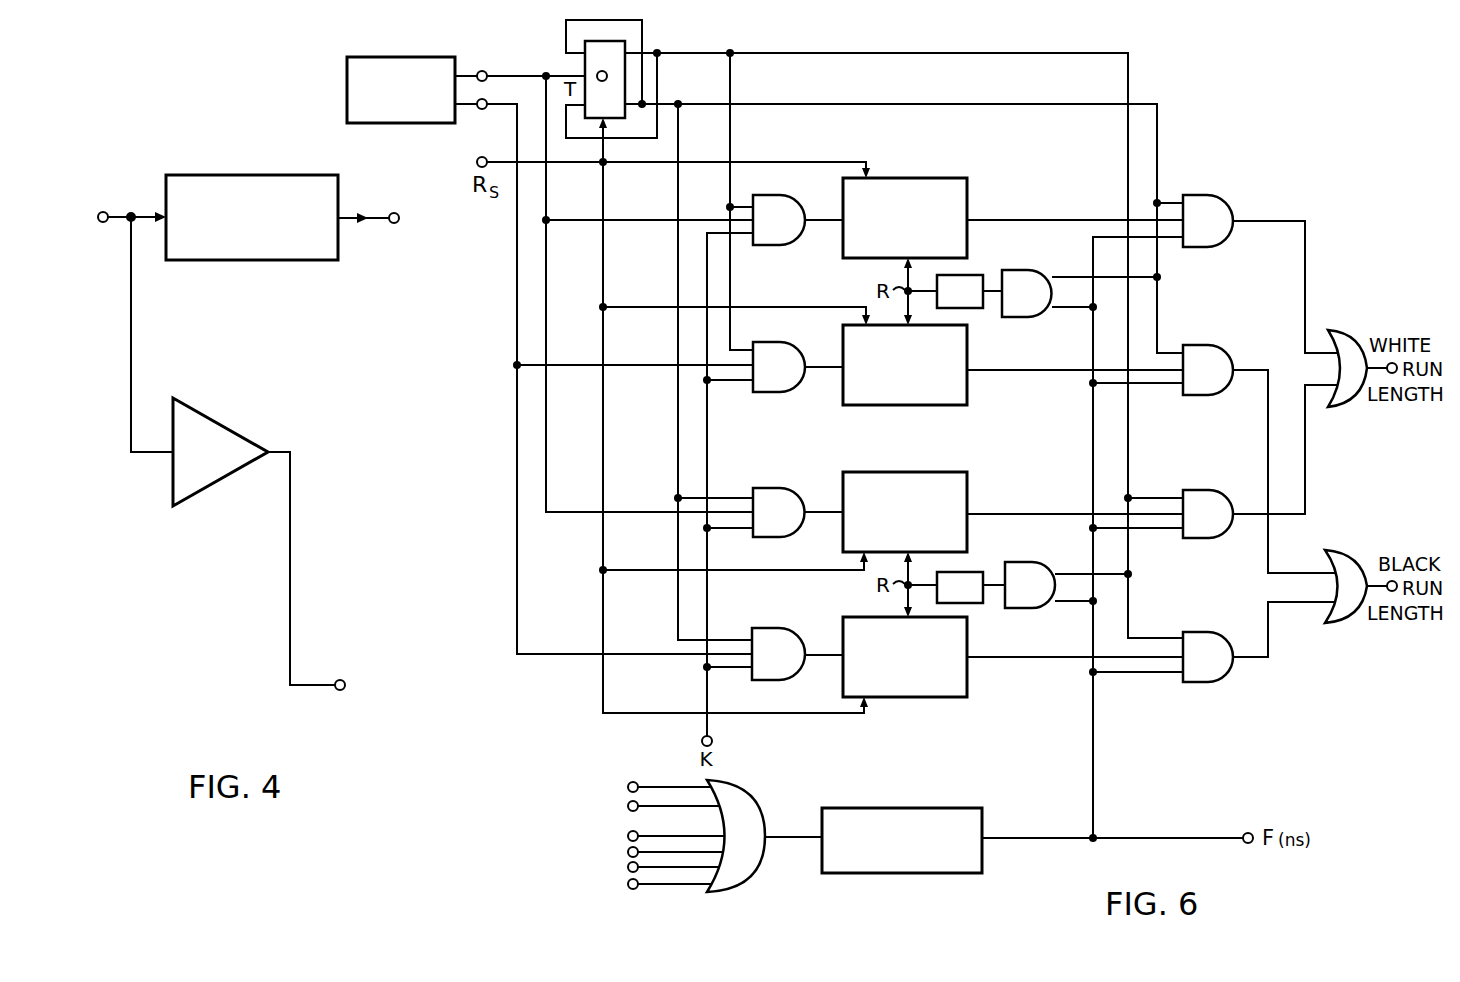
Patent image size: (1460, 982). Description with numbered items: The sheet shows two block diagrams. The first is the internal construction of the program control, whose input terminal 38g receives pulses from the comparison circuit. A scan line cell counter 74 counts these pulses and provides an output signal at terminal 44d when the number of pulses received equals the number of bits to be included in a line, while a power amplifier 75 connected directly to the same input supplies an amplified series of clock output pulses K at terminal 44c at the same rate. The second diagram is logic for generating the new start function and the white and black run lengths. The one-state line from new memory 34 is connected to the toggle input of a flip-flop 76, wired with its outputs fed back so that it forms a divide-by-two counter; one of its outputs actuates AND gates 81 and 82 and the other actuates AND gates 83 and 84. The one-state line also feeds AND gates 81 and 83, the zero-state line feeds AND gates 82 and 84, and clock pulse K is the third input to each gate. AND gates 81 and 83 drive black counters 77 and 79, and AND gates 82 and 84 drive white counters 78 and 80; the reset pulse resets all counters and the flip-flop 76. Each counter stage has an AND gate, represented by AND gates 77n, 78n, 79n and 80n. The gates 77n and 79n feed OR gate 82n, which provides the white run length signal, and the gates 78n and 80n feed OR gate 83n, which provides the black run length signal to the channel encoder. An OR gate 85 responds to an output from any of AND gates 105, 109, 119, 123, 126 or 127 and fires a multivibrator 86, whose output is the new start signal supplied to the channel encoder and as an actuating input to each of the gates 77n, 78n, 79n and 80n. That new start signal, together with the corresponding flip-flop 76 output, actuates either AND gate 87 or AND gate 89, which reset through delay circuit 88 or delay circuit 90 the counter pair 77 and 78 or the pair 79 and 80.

In FIG. 6, the new memory 34 is at (408, 57).
In FIG. 4, the input terminal from comparison circuit 38g is at (100, 210).
In FIG. 4, the terminal 44c is at (338, 679).
In FIG. 4, the terminal 44d is at (393, 224).
In FIG. 4, the scan line cell counter 74 is at (268, 262).
In FIG. 4, the power amplifier 75 is at (218, 418).
In FIG. 6, the flip-flop 76 is at (583, 70).
In FIG. 6, the black counter 77 is at (938, 178).
In FIG. 6, the white counter 78 is at (957, 405).
In FIG. 6, the black counter 79 is at (918, 472).
In FIG. 6, the white counter 80 is at (932, 697).
In FIG. 6, the AND gate 81 is at (800, 207).
In FIG. 6, the AND gate 82 is at (800, 353).
In FIG. 6, the AND gate 83 is at (785, 490).
In FIG. 6, the AND gate 84 is at (782, 630).
In FIG. 6, the OR gate 85 is at (752, 797).
In FIG. 6, the multivibrator 86 is at (925, 808).
In FIG. 6, the AND gate 87 is at (1013, 317).
In FIG. 6, the delay circuit 88 is at (957, 275).
In FIG. 6, the AND gate 89 is at (1016, 608).
In FIG. 6, the delay circuit 90 is at (962, 572).
In FIG. 6, the AND gates 77n is at (1226, 200).
In FIG. 6, the AND gates 78n is at (1228, 350).
In FIG. 6, the AND gates 79n is at (1208, 490).
In FIG. 6, the AND gates 80n is at (1208, 632).
In FIG. 6, the OR gate 82n is at (1345, 330).
In FIG. 6, the OR gate 83n is at (1348, 550).
In FIG. 6, the AND gate 105 is at (659, 787).
In FIG. 6, the AND gate 109 is at (659, 806).
In FIG. 6, the AND gate 119 is at (659, 836).
In FIG. 6, the AND gate 123 is at (659, 852).
In FIG. 6, the AND gate 126 is at (659, 867).
In FIG. 6, the AND gate 127 is at (659, 884).